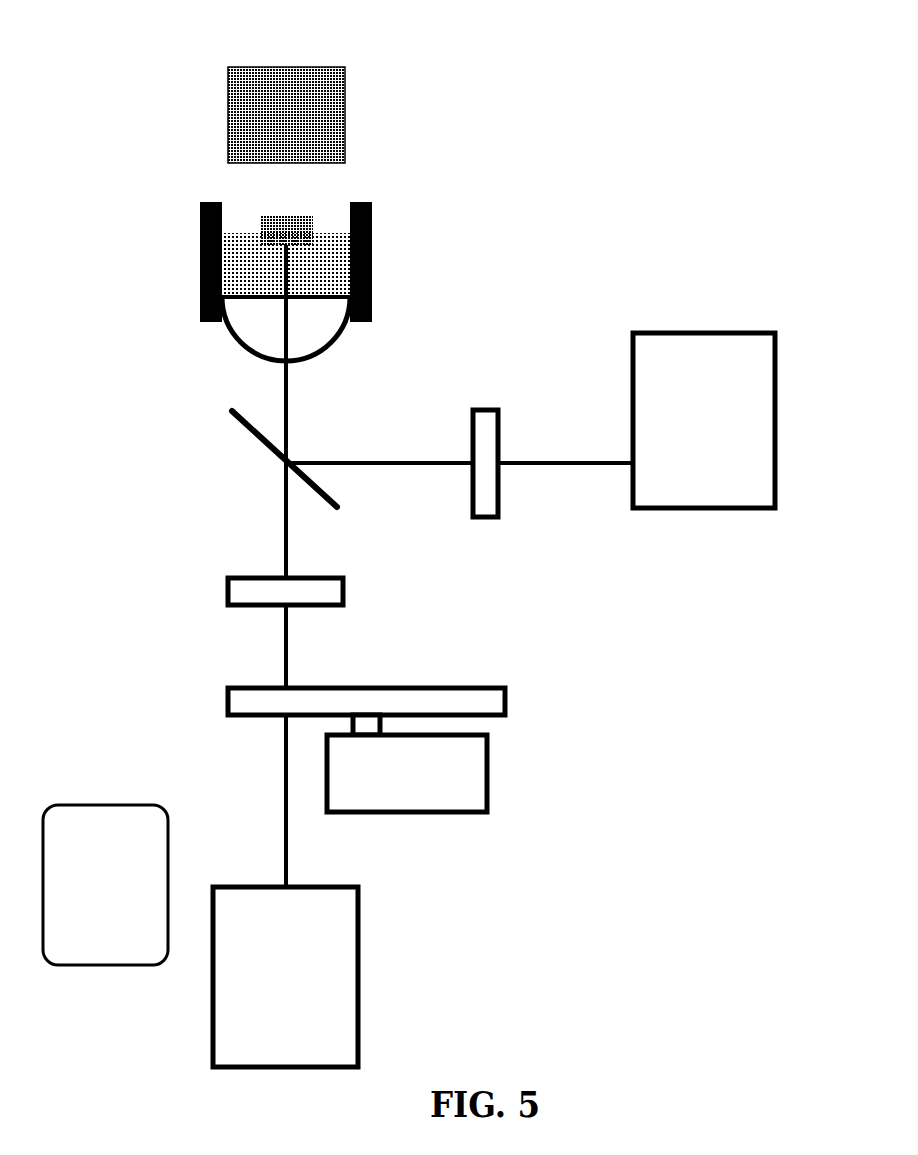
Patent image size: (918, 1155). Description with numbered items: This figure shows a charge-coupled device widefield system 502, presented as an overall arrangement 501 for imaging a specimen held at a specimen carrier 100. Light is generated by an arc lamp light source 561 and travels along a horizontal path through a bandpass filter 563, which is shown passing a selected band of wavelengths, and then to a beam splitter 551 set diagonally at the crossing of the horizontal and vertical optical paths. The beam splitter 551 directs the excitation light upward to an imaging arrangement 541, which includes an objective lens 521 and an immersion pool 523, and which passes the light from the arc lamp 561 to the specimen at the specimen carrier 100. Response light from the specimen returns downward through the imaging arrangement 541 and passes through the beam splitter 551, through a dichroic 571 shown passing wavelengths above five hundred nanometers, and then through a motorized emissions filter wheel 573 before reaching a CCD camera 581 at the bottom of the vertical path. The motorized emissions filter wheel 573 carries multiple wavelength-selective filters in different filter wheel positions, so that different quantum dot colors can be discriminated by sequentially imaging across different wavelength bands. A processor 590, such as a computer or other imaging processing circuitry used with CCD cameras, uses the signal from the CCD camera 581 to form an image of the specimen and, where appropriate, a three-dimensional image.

The specimen carrier 100 is at (282, 55).
The imaging system 501 is at (560, 58).
The CCD widefield system 502 is at (265, 296).
The objective lens 521 is at (241, 327).
The immersion pool 523 is at (232, 270).
The imaging arrangement 541 is at (372, 267).
The beam splitter 551 is at (258, 440).
The arc lamp light source 561 is at (757, 420).
The bandpass filter 563 is at (481, 527).
The dichroic 571 is at (345, 592).
The motorized emissions filter wheel 573 is at (500, 782).
The CCD camera 581 is at (372, 995).
The processor 590 is at (124, 805).